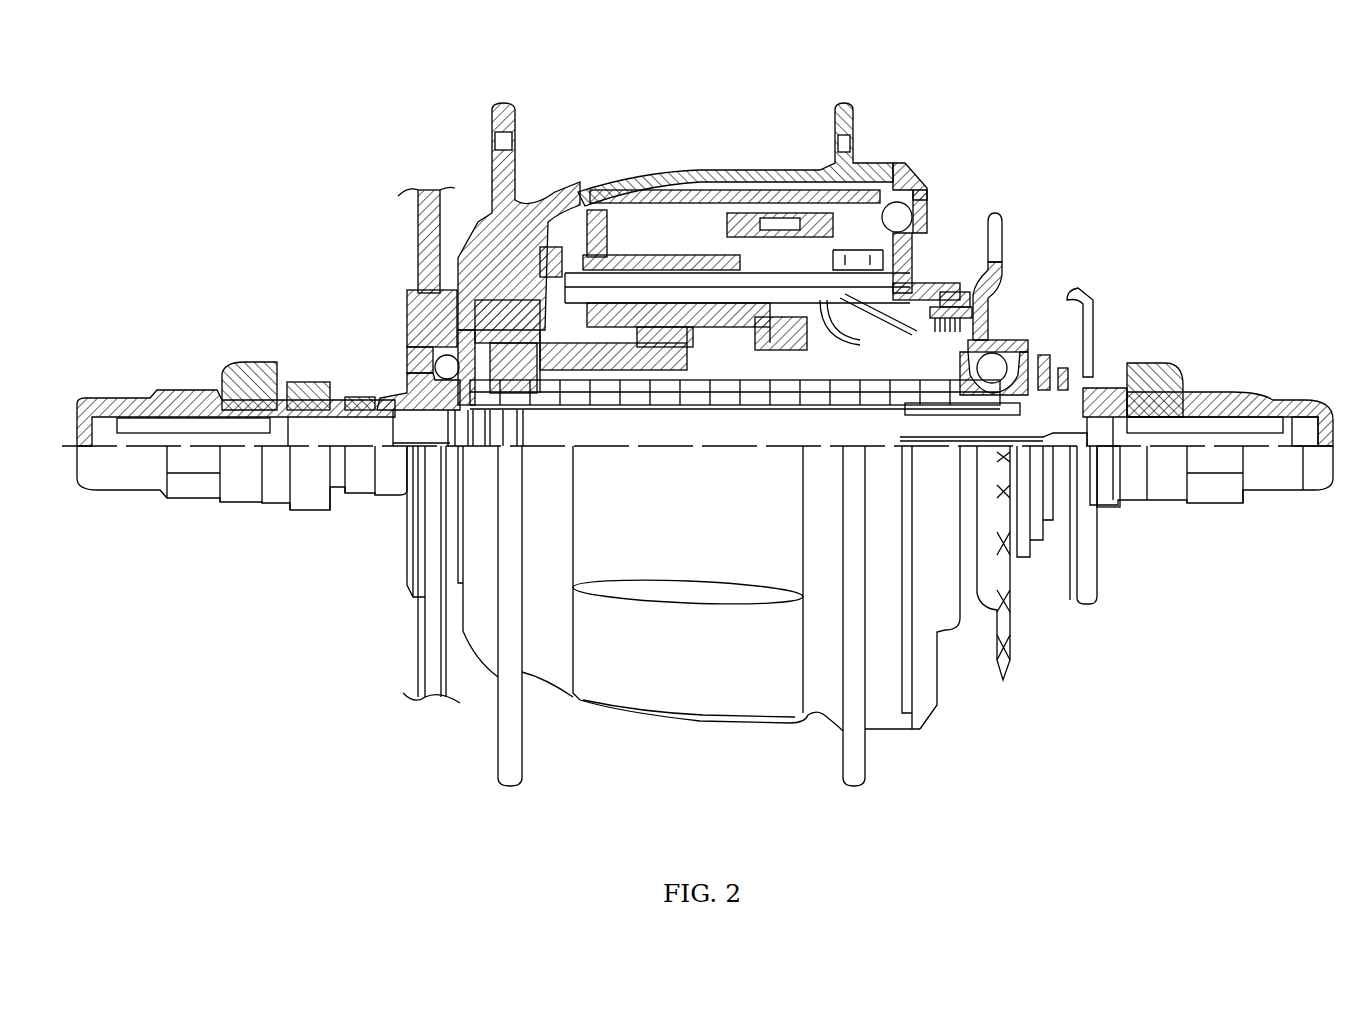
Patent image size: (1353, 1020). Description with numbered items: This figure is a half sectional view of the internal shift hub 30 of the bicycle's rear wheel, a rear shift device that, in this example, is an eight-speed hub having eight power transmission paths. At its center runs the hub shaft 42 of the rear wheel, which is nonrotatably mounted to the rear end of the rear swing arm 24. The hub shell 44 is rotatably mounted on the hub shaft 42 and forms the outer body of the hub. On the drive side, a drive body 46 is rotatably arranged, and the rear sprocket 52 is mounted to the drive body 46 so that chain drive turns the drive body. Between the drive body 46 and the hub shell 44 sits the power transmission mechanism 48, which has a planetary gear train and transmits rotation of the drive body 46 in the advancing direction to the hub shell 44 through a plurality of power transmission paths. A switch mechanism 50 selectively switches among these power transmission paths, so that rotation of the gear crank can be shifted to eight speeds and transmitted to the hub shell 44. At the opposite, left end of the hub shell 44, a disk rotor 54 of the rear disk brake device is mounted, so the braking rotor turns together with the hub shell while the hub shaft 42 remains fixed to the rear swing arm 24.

The rear swing arm 24 is at (282, 388).
The internal shift hub 30 is at (946, 128).
The hub shaft 42 is at (555, 432).
The hub shell 44 is at (692, 170).
The drive body 46 is at (928, 215).
The power transmission mechanism 48 is at (790, 213).
The switch mechanism 50 is at (960, 300).
The rear sprocket 52 is at (1003, 237).
The disk rotor 54 is at (418, 213).